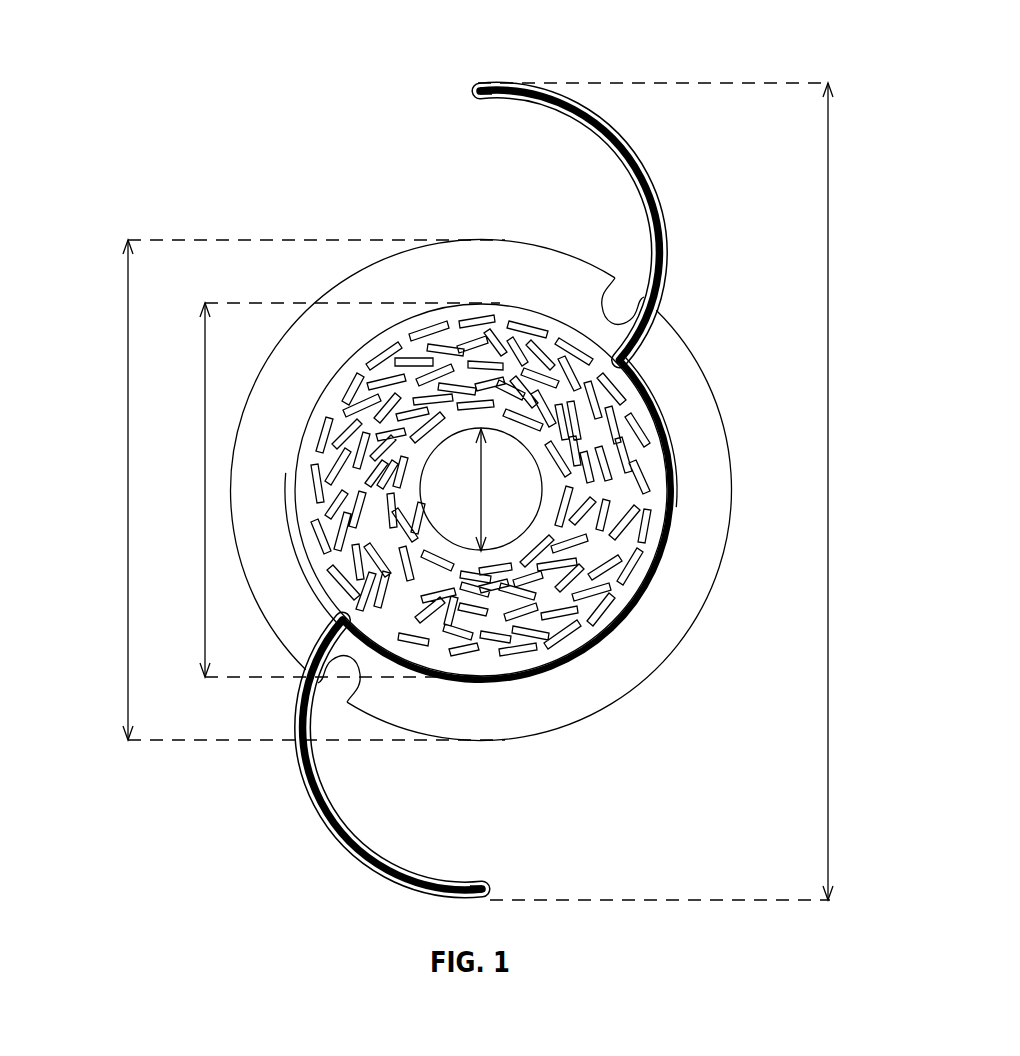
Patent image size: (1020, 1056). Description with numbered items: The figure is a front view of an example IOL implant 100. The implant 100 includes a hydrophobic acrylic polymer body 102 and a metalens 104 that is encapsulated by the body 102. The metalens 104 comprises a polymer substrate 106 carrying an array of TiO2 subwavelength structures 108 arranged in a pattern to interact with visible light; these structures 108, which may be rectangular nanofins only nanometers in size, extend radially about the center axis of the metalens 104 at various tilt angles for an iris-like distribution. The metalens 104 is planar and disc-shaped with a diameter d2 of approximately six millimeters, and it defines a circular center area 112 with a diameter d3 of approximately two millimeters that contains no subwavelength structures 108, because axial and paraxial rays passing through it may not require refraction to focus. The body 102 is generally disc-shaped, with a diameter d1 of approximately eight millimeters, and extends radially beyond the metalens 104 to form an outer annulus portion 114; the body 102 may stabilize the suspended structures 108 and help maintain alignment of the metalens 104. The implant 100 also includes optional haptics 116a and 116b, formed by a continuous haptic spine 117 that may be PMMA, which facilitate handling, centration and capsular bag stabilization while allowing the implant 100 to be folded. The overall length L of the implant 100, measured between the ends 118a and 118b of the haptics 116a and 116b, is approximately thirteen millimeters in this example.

The IOL implant 100 is at (522, 460).
The hydrophobic acrylic polymer body 102 is at (542, 242).
The metalens 104 is at (510, 304).
The polymer substrate 106 is at (660, 507).
The subwavelength structures 108 is at (520, 657).
The center area 112 is at (515, 464).
The outer annulus portion 114 is at (680, 620).
The haptic 116a is at (665, 222).
The haptic 116b is at (325, 813).
The haptic spine 117 is at (672, 436).
The end of haptic 118a is at (465, 91).
The end of haptic 118b is at (505, 885).
The diameter of the body d1 is at (128, 525).
The diameter of the metalens d2 is at (205, 470).
The diameter of the center area d3 is at (481, 487).
The overall length L is at (826, 562).